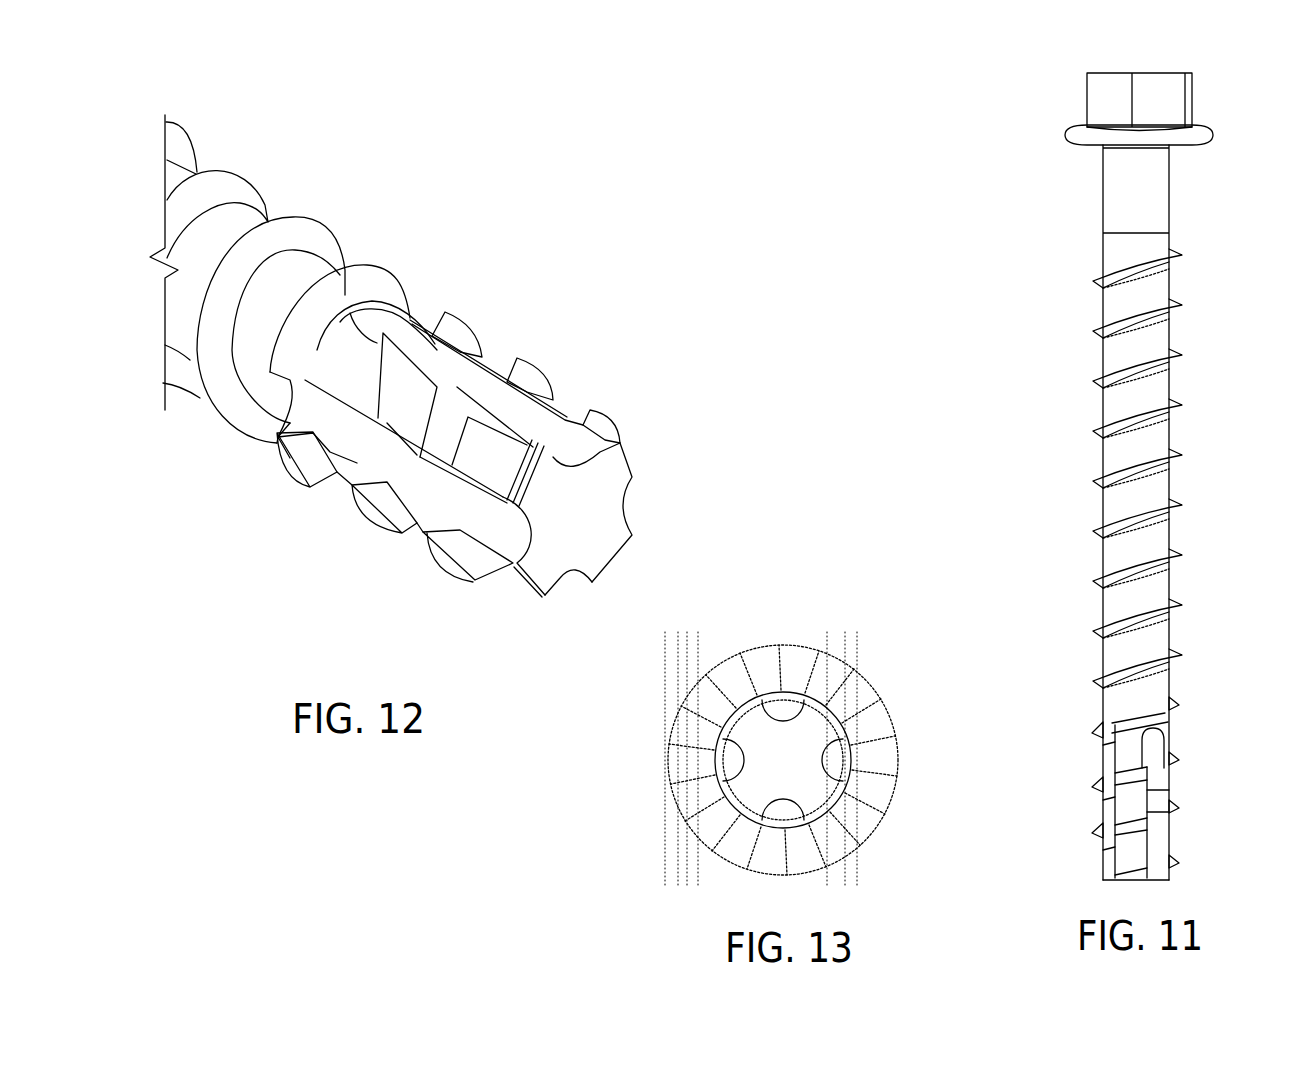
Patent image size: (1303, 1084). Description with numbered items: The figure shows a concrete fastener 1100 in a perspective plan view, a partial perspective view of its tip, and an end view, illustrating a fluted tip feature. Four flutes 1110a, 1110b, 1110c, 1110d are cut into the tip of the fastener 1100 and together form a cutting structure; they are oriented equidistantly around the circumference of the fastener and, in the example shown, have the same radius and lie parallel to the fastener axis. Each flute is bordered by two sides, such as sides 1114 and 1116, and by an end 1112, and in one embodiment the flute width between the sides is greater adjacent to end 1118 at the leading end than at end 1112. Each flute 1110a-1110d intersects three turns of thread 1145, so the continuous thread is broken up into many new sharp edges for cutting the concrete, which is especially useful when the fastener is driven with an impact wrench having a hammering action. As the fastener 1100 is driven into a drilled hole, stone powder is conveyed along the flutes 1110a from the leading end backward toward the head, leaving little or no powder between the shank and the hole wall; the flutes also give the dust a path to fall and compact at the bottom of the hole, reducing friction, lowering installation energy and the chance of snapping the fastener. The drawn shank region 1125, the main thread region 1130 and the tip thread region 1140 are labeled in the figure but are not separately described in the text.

In FIG. 12, the fastener 1100 is at (300, 138).
In FIG. 13, the fastener 1100 is at (905, 602).
In FIG. 11, the fastener 1100 is at (1080, 62).
In FIG. 12, the end 1112 is at (353, 307).
In FIG. 11, the end 1112 is at (1157, 722).
In FIG. 12, the side 1114 is at (427, 381).
In FIG. 11, the side 1114 is at (1140, 768).
In FIG. 12, the side 1116 is at (460, 352).
In FIG. 11, the side 1116 is at (1168, 775).
In FIG. 11, the end 1118 is at (1150, 880).
In FIG. 11, the shank 1125 is at (1175, 258).
In FIG. 11, the thread 1130 is at (1172, 302).
In FIG. 11, the tip thread 1140 is at (1168, 843).
In FIG. 12, the thread 1145 is at (452, 318).
In FIG. 13, the thread 1145 is at (838, 662).
In FIG. 12, the flute 1110a is at (566, 440).
In FIG. 13, the flute 1110a is at (777, 700).
In FIG. 11, the flute 1110a is at (1158, 795).
In FIG. 12, the flute 1110b is at (632, 510).
In FIG. 13, the flute 1110b is at (850, 760).
In FIG. 12, the flute 1110c is at (572, 585).
In FIG. 13, the flute 1110c is at (782, 815).
In FIG. 12, the flute 1110d is at (468, 503).
In FIG. 13, the flute 1110d is at (732, 758).
In FIG. 11, the flute 1110d is at (1108, 853).